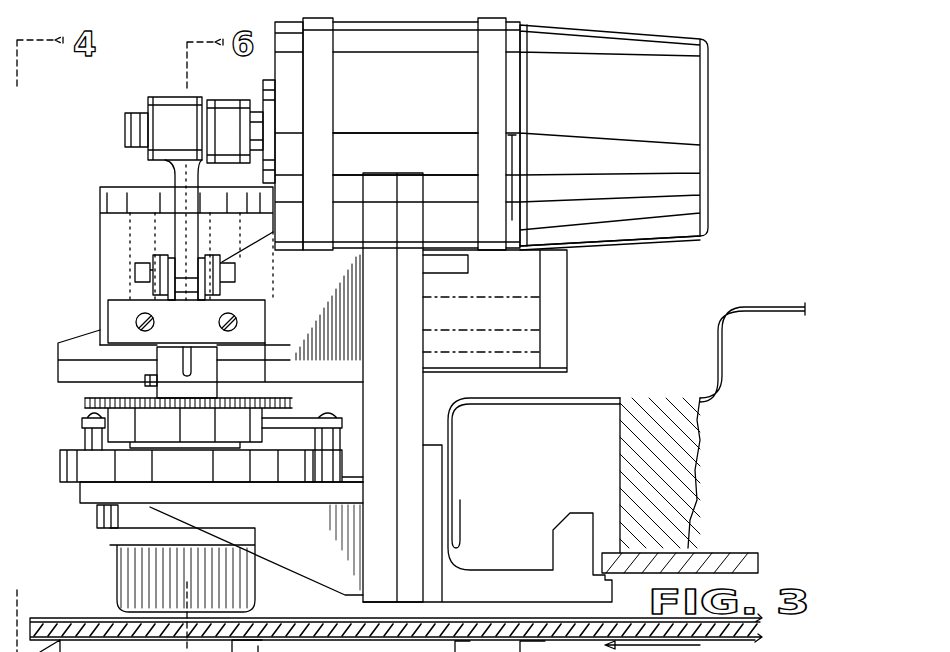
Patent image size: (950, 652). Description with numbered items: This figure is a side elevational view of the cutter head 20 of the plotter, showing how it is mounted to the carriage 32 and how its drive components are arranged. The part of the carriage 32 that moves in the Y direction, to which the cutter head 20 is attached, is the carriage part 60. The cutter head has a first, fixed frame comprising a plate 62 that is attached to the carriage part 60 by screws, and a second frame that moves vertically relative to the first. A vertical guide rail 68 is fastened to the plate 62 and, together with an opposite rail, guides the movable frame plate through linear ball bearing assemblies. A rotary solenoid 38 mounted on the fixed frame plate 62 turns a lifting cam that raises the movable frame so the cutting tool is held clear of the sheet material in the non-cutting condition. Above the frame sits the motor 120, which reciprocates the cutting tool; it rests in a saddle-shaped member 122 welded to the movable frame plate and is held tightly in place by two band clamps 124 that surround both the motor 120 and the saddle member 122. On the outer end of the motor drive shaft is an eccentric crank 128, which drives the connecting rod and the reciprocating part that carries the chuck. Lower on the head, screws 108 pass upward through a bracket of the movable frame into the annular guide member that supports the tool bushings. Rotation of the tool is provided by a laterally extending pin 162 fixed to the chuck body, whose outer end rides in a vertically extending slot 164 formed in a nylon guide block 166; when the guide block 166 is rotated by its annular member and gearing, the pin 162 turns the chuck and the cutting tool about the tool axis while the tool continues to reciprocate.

The cutter head 20 is at (728, 141).
The motor 120 is at (576, 240).
The saddle-shaped member 122 is at (404, 136).
The band clamps 124 is at (325, 92).
The eccentric crank 128 is at (122, 126).
The rotary solenoid 38 is at (555, 323).
The carriage 32 is at (636, 398).
The plate 62 is at (420, 406).
The carriage part 60 is at (474, 582).
The vertical guide rail 68 is at (370, 522).
The screws 108 is at (100, 512).
The pin 162 is at (184, 356).
The slot 164 is at (157, 372).
The guide block 166 is at (207, 381).